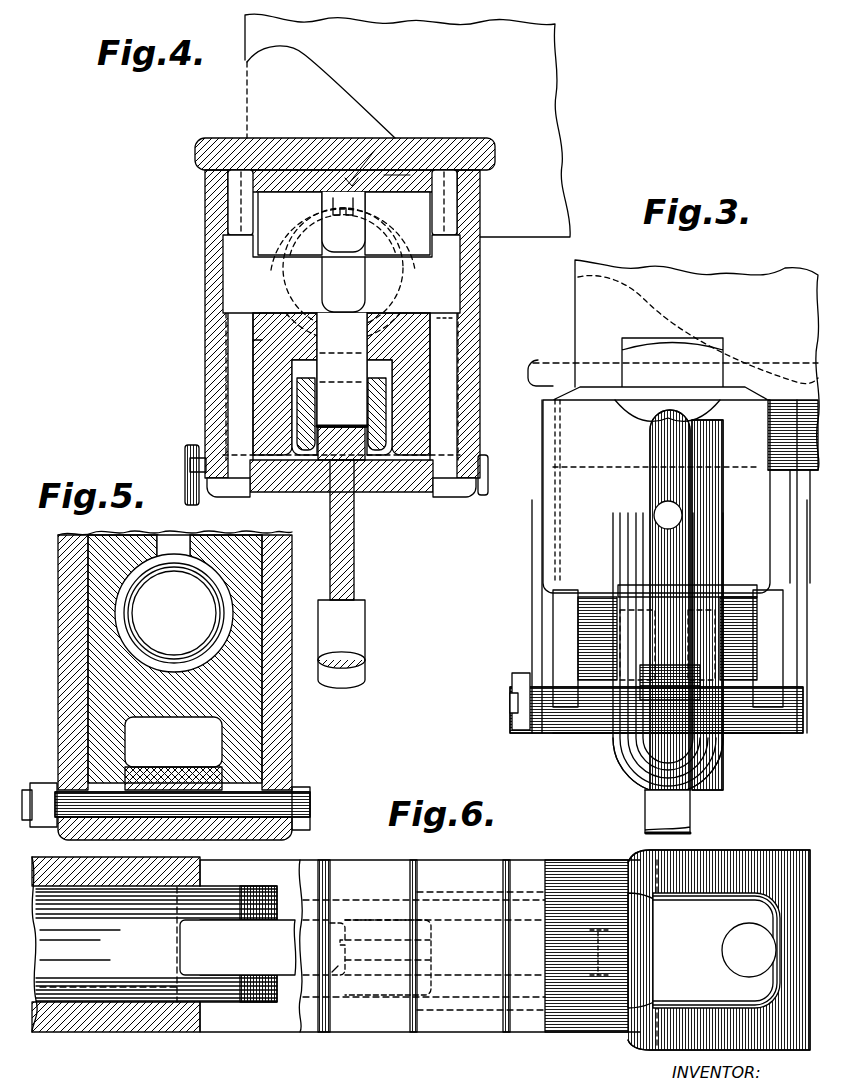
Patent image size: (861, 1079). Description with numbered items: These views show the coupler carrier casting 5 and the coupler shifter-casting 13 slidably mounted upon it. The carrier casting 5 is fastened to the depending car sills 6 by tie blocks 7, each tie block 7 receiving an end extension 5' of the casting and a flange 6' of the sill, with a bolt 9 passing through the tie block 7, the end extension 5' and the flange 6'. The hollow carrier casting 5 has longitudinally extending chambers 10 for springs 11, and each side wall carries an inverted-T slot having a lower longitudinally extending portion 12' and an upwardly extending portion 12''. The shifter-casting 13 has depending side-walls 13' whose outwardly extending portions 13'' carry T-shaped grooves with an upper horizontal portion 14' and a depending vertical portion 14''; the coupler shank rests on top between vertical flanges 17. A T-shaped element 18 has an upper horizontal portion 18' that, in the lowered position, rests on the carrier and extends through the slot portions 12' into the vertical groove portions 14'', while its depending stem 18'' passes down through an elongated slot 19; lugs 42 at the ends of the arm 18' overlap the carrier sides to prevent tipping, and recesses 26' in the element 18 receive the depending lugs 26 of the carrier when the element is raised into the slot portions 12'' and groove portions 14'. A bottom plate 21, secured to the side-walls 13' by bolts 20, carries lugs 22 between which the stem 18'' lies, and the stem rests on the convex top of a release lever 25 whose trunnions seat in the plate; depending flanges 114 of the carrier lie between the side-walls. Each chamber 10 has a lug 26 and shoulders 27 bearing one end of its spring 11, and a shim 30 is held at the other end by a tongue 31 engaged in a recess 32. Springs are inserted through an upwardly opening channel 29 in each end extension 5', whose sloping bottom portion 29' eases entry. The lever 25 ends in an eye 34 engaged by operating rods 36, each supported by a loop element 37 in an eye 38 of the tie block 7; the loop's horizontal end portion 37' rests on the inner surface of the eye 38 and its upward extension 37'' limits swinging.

In FIG. 4, the coupler carrier casting 5 is at (371, 384).
In FIG. 5, the coupler carrier casting 5 is at (199, 659).
In FIG. 3, the coupler carrier casting 5 is at (658, 632).
In FIG. 6, the coupler carrier casting 5 is at (420, 937).
In FIG. 3, the end extension 5' is at (692, 818).
In FIG. 6, the end extension 5' is at (719, 940).
In FIG. 4, the car sill 6 is at (416, 125).
In FIG. 3, the car sill 6 is at (697, 360).
In FIG. 3, the sill flange 6' is at (779, 491).
In FIG. 3, the tie block 7 is at (550, 460).
In FIG. 3, the bolt 9 is at (712, 350).
In FIG. 5, the spring chamber 10 is at (128, 568).
In FIG. 6, the spring chamber 10 is at (110, 890).
In FIG. 4, the spring 11 is at (320, 215).
In FIG. 5, the spring 11 is at (162, 598).
In FIG. 4, the lower longitudinally extending slot portion 12' is at (344, 223).
In FIG. 6, the lower longitudinally extending slot portion 12' is at (238, 945).
In FIG. 4, the upper vertical slot portion 12'' is at (479, 315).
In FIG. 4, the coupler shifter-casting 13 is at (345, 148).
In FIG. 3, the coupler shifter-casting 13 is at (673, 358).
In FIG. 4, the depending side-wall 13' is at (337, 502).
In FIG. 5, the depending side-wall 13' is at (175, 662).
In FIG. 3, the depending side-wall 13' is at (638, 648).
In FIG. 4, the outwardly extending portion 13'' is at (338, 324).
In FIG. 3, the outwardly extending portion 13'' is at (646, 566).
In FIG. 4, the upper horizontal groove portion 14' is at (195, 315).
In FIG. 4, the depending vertical groove portion 14'' is at (333, 384).
In FIG. 4, the vertical flange 17 is at (282, 80).
In FIG. 3, the vertical flange 17 is at (658, 293).
In FIG. 4, the T-shaped element 18 is at (212, 349).
In FIG. 4, the upper horizontal portion 18' is at (347, 274).
In FIG. 4, the depending vertical stem 18'' is at (342, 370).
In FIG. 4, the slot 19 is at (450, 320).
In FIG. 6, the slot 19 is at (218, 985).
In FIG. 4, the bolt 20 is at (190, 458).
In FIG. 5, the bolt 20 is at (300, 805).
In FIG. 3, the bolt 20 is at (515, 700).
In FIG. 4, the bottom plate 21 is at (268, 470).
In FIG. 5, the bottom plate 21 is at (180, 840).
In FIG. 3, the bottom plate 21 is at (598, 720).
In FIG. 4, the lug 22 is at (300, 425).
In FIG. 4, the release lever 25 is at (355, 555).
In FIG. 3, the release lever 25 is at (690, 815).
In FIG. 4, the depending lug 26 is at (338, 182).
In FIG. 5, the depending lug 26 is at (154, 532).
In FIG. 6, the depending lug 26 is at (316, 1021).
In FIG. 4, the recess 26' is at (343, 284).
In FIG. 5, the lower shoulder 27 is at (185, 640).
In FIG. 6, the lower shoulder 27 is at (273, 975).
In FIG. 6, the channel 29 is at (716, 936).
In FIG. 6, the channel bottom portion 29' is at (620, 949).
In FIG. 4, the shim 30 is at (395, 178).
In FIG. 4, the tongue 31 is at (358, 182).
In FIG. 4, the recess 32 is at (352, 182).
In FIG. 6, the recess 32 is at (600, 948).
In FIG. 4, the eye 34 is at (365, 672).
In FIG. 3, the operating rod 36 is at (660, 803).
In FIG. 3, the loop element 37 is at (687, 653).
In FIG. 3, the horizontal end portion 37' is at (645, 600).
In FIG. 3, the upward vertical extension 37'' is at (726, 605).
In FIG. 3, the eye 38 is at (652, 487).
In FIG. 4, the lug 42 is at (240, 245).
In FIG. 4, the depending flange 114 is at (300, 410).
In FIG. 5, the depending flange 114 is at (238, 752).
In FIG. 3, the depending flange 114 is at (670, 643).